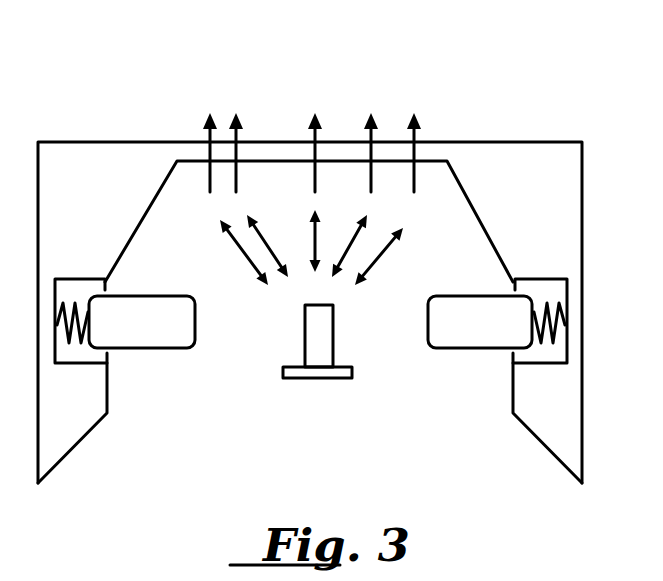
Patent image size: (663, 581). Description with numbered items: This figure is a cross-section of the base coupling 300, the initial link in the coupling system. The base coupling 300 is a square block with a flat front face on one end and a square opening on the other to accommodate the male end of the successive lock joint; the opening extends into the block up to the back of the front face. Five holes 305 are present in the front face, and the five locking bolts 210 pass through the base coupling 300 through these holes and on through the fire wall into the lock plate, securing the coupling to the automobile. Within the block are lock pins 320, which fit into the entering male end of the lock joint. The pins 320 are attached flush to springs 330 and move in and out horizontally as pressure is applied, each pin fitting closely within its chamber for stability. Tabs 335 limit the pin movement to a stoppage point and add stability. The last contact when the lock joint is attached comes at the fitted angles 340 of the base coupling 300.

The base coupling 300 is at (103, 102).
The holes 305 is at (408, 105).
The locking bolts 210 is at (322, 390).
The lock pins 320 is at (174, 360).
The springs 330 is at (72, 346).
The tabs 335 is at (506, 366).
The fitted angles 340 is at (541, 452).